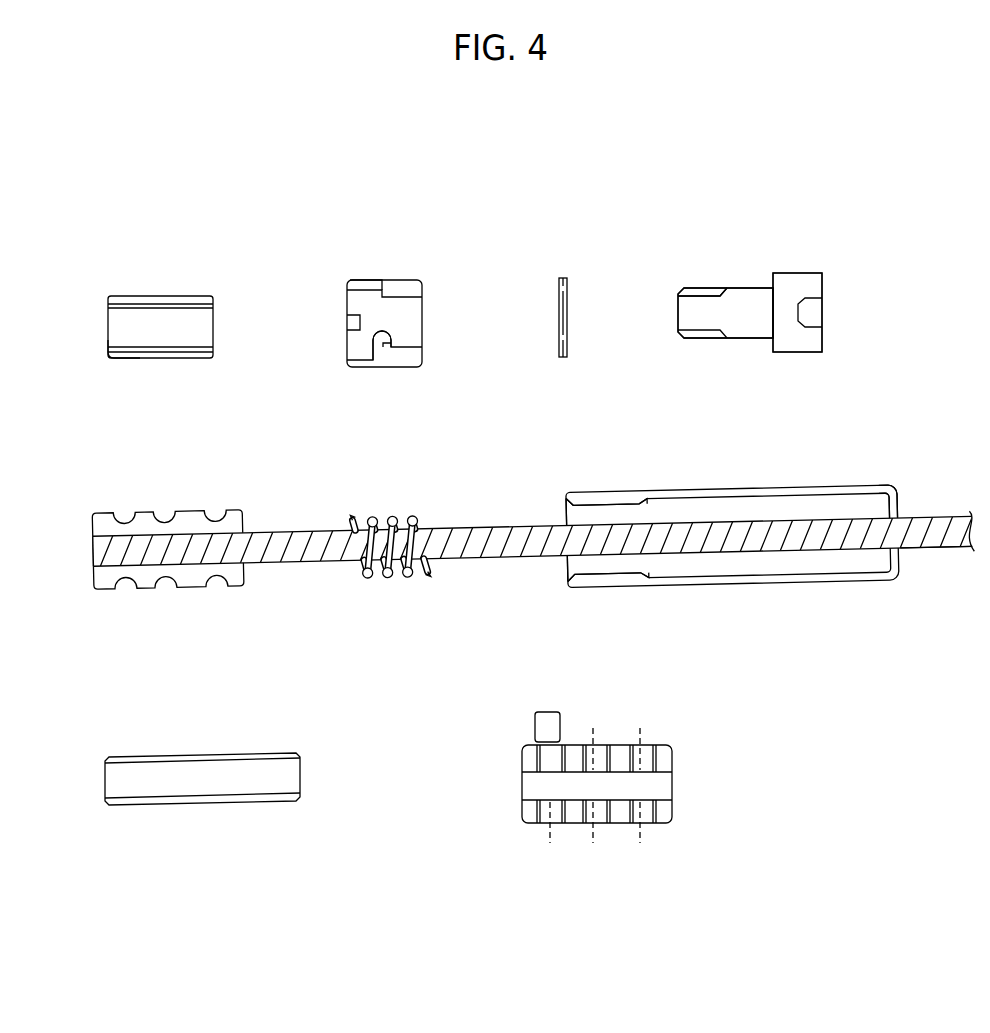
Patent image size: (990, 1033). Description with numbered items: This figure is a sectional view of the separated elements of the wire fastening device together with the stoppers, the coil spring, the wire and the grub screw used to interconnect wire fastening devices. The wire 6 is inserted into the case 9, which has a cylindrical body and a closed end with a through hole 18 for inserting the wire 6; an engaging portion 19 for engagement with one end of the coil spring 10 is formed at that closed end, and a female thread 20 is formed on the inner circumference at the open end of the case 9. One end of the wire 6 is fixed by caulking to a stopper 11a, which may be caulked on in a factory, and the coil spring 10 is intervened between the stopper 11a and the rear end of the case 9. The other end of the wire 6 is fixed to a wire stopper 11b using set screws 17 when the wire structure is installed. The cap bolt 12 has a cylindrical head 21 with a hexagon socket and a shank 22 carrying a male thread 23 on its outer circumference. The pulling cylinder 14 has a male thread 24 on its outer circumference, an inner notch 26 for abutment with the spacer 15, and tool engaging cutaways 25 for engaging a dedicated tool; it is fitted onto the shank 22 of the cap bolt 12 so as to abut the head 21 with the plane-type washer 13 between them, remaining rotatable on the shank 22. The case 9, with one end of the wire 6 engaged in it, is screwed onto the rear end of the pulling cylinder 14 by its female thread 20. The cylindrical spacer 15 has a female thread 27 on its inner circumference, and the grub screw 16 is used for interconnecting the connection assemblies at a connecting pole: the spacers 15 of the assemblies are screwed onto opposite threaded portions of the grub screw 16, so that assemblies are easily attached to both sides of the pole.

The wire 6 is at (948, 515).
The case 9 is at (688, 488).
The coil spring 10 is at (407, 573).
The stopper 11a is at (202, 525).
The wire stopper 11b is at (672, 806).
The cap bolt 12 is at (738, 278).
The washer 13 is at (563, 278).
The pulling cylinder 14 is at (407, 272).
The spacer 15 is at (172, 292).
The grub screw 16 is at (235, 757).
The set screws 17 is at (560, 727).
The through hole 18 is at (897, 548).
The engaging portion 19 is at (880, 496).
The female thread 20 is at (565, 506).
The head 21 is at (795, 283).
The shank 22 is at (743, 333).
The male thread 23 is at (703, 288).
The male thread 24 is at (362, 280).
The tool engaging cutaways 25 is at (348, 323).
The inner notch 26 is at (385, 333).
The female thread 27 is at (133, 347).